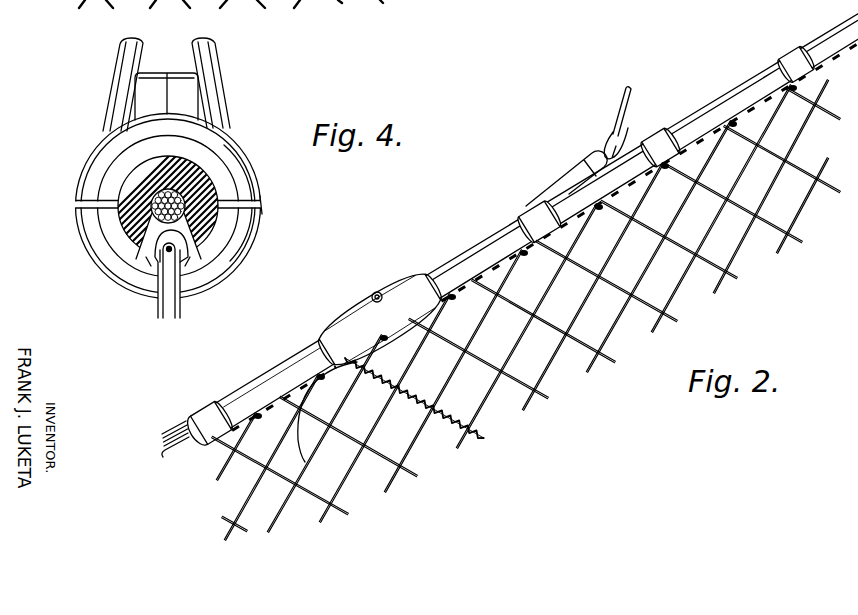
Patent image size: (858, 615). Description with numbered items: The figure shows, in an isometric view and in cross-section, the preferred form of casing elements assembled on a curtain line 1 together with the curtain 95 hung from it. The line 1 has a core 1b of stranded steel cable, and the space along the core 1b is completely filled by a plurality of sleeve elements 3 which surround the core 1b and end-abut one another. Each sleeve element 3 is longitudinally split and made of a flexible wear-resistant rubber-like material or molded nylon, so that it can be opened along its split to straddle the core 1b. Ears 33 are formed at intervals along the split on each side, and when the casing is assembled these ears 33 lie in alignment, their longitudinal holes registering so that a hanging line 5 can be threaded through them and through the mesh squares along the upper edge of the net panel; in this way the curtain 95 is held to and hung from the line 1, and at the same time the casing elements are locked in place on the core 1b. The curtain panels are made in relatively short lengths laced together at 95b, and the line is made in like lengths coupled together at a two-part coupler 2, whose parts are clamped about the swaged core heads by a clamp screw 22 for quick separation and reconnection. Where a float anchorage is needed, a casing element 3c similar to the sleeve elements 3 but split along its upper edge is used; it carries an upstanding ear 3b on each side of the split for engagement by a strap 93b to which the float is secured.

In FIG. 2, the line 1 is at (744, 72).
In FIG. 4, the core 1b is at (147, 218).
In FIG. 2, the core 1b is at (182, 427).
In FIG. 4, the coupler 2 is at (260, 216).
In FIG. 2, the coupler 2 is at (343, 292).
In FIG. 4, the sleeve element 3 is at (137, 184).
In FIG. 2, the sleeve element 3 is at (277, 365).
In FIG. 4, the ear 3b is at (190, 90).
In FIG. 2, the ear 3b is at (577, 166).
In FIG. 2, the casing element 3c is at (538, 204).
In FIG. 4, the hanging line 5 is at (166, 260).
In FIG. 2, the hanging line 5 is at (180, 455).
In FIG. 2, the clamp screw 22 is at (376, 292).
In FIG. 4, the ears 33 is at (145, 258).
In FIG. 2, the ears 33 is at (600, 205).
In FIG. 4, the strap 93b is at (128, 63).
In FIG. 2, the strap 93b is at (621, 92).
In FIG. 4, the curtain 95 is at (177, 311).
In FIG. 2, the curtain 95 is at (708, 265).
In FIG. 2, the lacing 95b is at (446, 420).